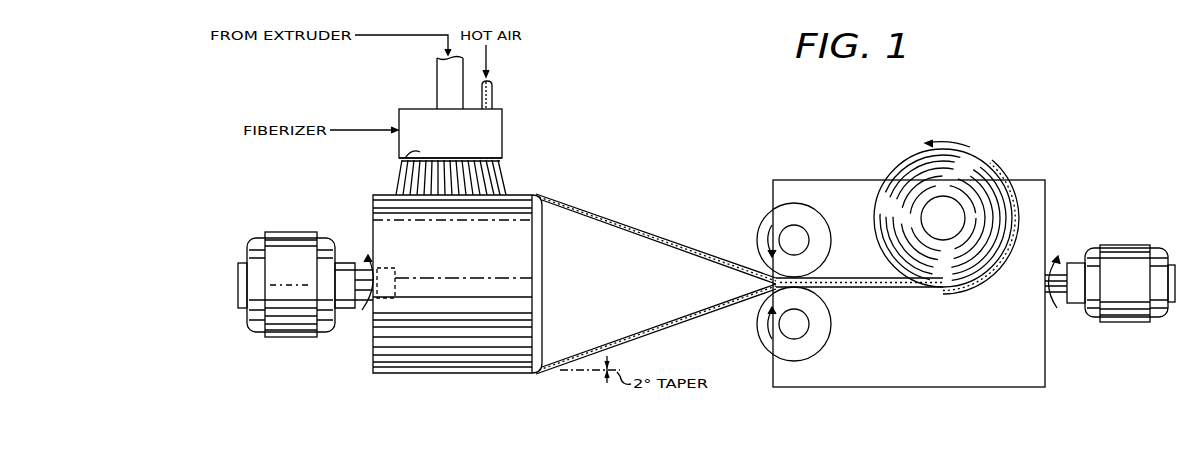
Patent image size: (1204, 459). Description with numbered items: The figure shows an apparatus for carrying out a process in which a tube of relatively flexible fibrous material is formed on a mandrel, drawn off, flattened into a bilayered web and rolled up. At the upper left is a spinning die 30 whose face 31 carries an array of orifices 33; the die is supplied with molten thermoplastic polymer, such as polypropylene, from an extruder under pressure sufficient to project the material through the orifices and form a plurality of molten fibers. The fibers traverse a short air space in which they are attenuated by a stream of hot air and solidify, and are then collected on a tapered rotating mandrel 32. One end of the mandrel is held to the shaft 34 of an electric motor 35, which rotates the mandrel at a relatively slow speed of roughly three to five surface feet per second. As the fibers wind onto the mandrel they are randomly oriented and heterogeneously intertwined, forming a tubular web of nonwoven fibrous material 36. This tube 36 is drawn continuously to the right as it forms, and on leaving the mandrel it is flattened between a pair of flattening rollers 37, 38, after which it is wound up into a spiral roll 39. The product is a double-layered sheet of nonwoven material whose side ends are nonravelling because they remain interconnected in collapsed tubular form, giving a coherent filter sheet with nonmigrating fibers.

The spinning die 30 is at (498, 118).
The face 31 is at (500, 164).
The tapered rotating mandrel 32 is at (466, 258).
The orifices 33 is at (420, 152).
The shaft 34 is at (366, 305).
The electric motor 35 is at (283, 337).
The tubular web of nonwoven fibrous material 36 is at (520, 194).
The flattening roller 37 is at (817, 230).
The flattening roller 38 is at (822, 338).
The spiral roll 39 is at (975, 184).